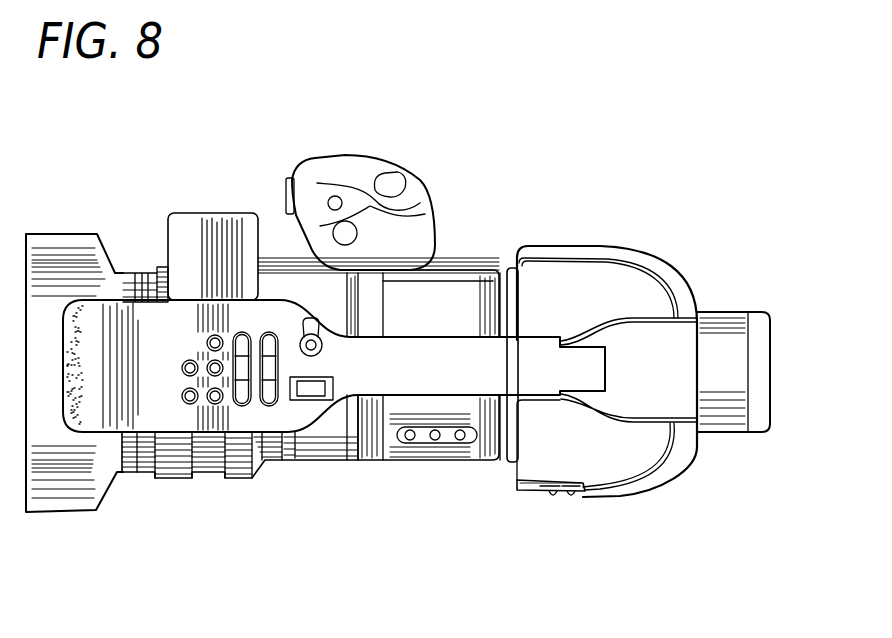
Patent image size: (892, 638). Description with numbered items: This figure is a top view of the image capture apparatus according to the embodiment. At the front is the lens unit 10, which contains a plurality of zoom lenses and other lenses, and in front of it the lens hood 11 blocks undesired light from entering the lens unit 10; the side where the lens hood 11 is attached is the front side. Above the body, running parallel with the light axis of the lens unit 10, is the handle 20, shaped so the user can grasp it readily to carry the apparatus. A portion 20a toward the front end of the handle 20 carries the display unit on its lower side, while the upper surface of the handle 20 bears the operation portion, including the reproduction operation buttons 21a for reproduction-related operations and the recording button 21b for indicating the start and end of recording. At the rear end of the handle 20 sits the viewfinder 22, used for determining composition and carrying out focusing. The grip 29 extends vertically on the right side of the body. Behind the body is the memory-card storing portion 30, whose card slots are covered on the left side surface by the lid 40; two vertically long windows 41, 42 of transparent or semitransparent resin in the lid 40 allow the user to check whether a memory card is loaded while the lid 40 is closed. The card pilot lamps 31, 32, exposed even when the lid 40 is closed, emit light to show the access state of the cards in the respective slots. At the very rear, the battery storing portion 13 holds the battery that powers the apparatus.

The lens unit 10 is at (207, 462).
The lens hood 11 is at (53, 513).
The battery storing portion 13 is at (700, 447).
The handle 20 is at (447, 352).
The portion toward the front end of the handle 20a is at (145, 324).
The reproduction operation buttons 21a is at (270, 331).
The recording button 21b is at (298, 332).
The viewfinder 22 is at (728, 312).
The grip 29 is at (427, 207).
The memory-card storing portion 30 is at (610, 492).
The card pilot lamp 31 is at (553, 490).
The card pilot lamp 32 is at (570, 490).
The lid 40 is at (585, 496).
The window 41 is at (553, 498).
The window 42 is at (571, 498).